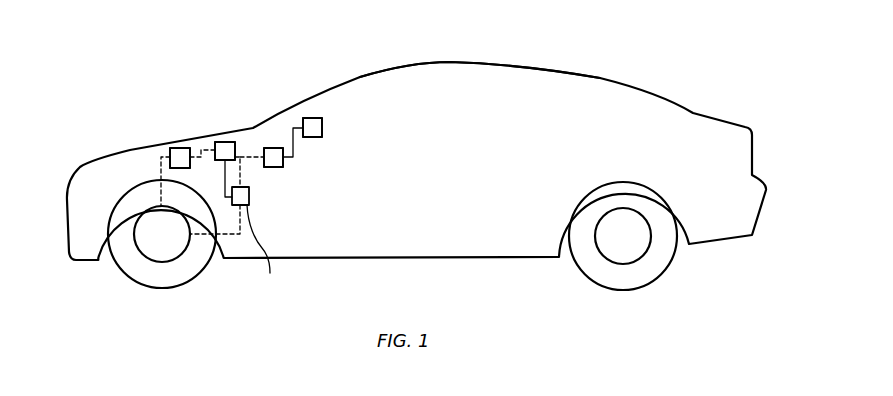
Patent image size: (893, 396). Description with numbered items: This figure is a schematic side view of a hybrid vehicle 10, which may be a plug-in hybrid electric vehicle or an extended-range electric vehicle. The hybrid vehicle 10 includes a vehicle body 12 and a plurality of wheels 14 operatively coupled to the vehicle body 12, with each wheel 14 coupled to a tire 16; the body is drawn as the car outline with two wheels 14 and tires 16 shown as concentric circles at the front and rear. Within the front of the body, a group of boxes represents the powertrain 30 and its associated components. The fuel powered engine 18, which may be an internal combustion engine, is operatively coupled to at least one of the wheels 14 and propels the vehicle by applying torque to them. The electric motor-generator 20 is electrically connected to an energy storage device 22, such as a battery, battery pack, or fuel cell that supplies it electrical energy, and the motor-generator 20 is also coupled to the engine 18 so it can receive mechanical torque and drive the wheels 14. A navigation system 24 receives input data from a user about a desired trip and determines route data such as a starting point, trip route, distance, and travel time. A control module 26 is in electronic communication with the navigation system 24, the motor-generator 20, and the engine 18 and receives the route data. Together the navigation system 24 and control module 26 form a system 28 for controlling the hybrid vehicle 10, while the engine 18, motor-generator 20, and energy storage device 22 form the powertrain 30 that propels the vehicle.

The hybrid vehicle 10 is at (710, 91).
The vehicle body 12 is at (413, 67).
The wheel 14 is at (137, 253).
The tire 16 is at (197, 277).
The fuel powered engine 18 is at (177, 147).
The electric motor-generator 20 is at (263, 251).
The energy storage device 22 is at (272, 147).
The navigation system 24 is at (312, 117).
The control module 26 is at (225, 142).
The system for controlling the hybrid vehicle 28 is at (312, 169).
The powertrain 30 is at (262, 206).